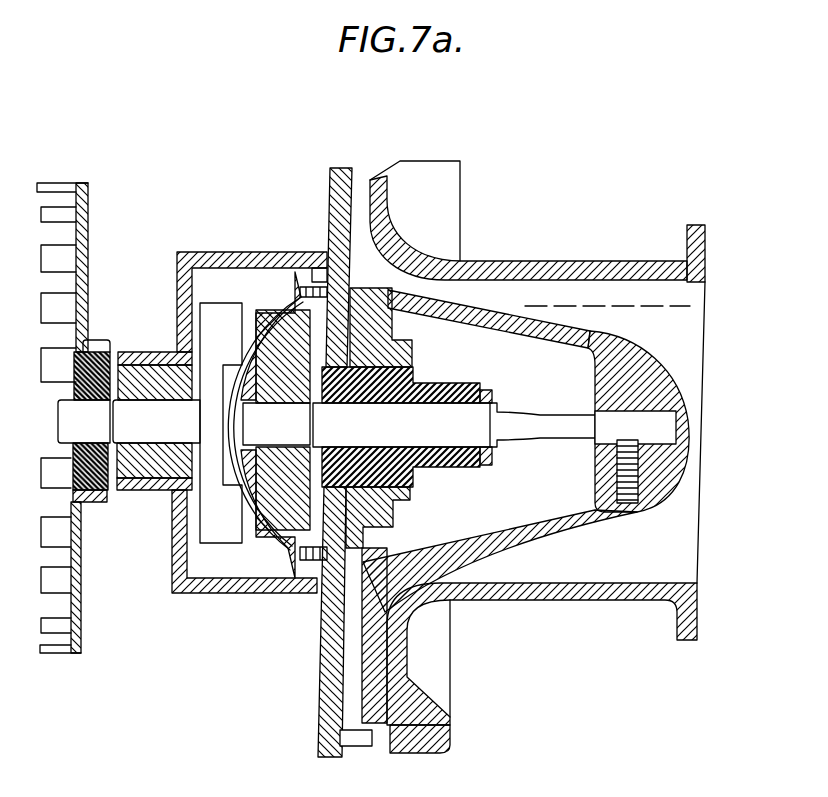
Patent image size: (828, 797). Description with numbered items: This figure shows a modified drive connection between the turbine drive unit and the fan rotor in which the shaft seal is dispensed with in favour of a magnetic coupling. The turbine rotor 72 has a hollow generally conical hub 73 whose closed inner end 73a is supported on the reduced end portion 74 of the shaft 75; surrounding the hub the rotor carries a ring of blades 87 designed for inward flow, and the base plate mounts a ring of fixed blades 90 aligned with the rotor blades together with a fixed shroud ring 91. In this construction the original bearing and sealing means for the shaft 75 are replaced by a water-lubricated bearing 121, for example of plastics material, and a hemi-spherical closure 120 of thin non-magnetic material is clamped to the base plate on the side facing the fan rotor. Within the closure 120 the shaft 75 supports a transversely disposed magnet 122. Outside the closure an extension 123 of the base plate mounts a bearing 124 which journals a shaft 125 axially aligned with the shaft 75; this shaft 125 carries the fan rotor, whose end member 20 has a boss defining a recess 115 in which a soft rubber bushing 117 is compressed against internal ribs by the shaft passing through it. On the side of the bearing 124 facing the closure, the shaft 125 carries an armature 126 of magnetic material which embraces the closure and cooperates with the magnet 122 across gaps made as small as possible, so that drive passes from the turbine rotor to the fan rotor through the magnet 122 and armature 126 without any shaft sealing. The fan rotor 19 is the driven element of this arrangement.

The cooling fins 19 is at (58, 627).
The end member 20 is at (74, 550).
The turbine rotor 72 is at (476, 248).
The hollow generally conical hub 73 is at (513, 316).
The closed inner end 73a is at (618, 366).
The reduced end portion 74 is at (640, 432).
The shaft 75 is at (410, 440).
The ring of blades 87 is at (465, 615).
The ring of fixed blades 90 is at (380, 747).
The fixed shroud ring 91 is at (437, 737).
The recess 115 is at (108, 495).
The soft rubber bushing 117 is at (100, 364).
The hemi-spherical closure 120 is at (212, 560).
The water-lubricated bearing 121 is at (418, 392).
The magnet 122 is at (292, 508).
The extension 123 is at (262, 588).
The bearing 124 is at (148, 377).
The shaft 125 is at (175, 432).
The armature 126 is at (270, 295).